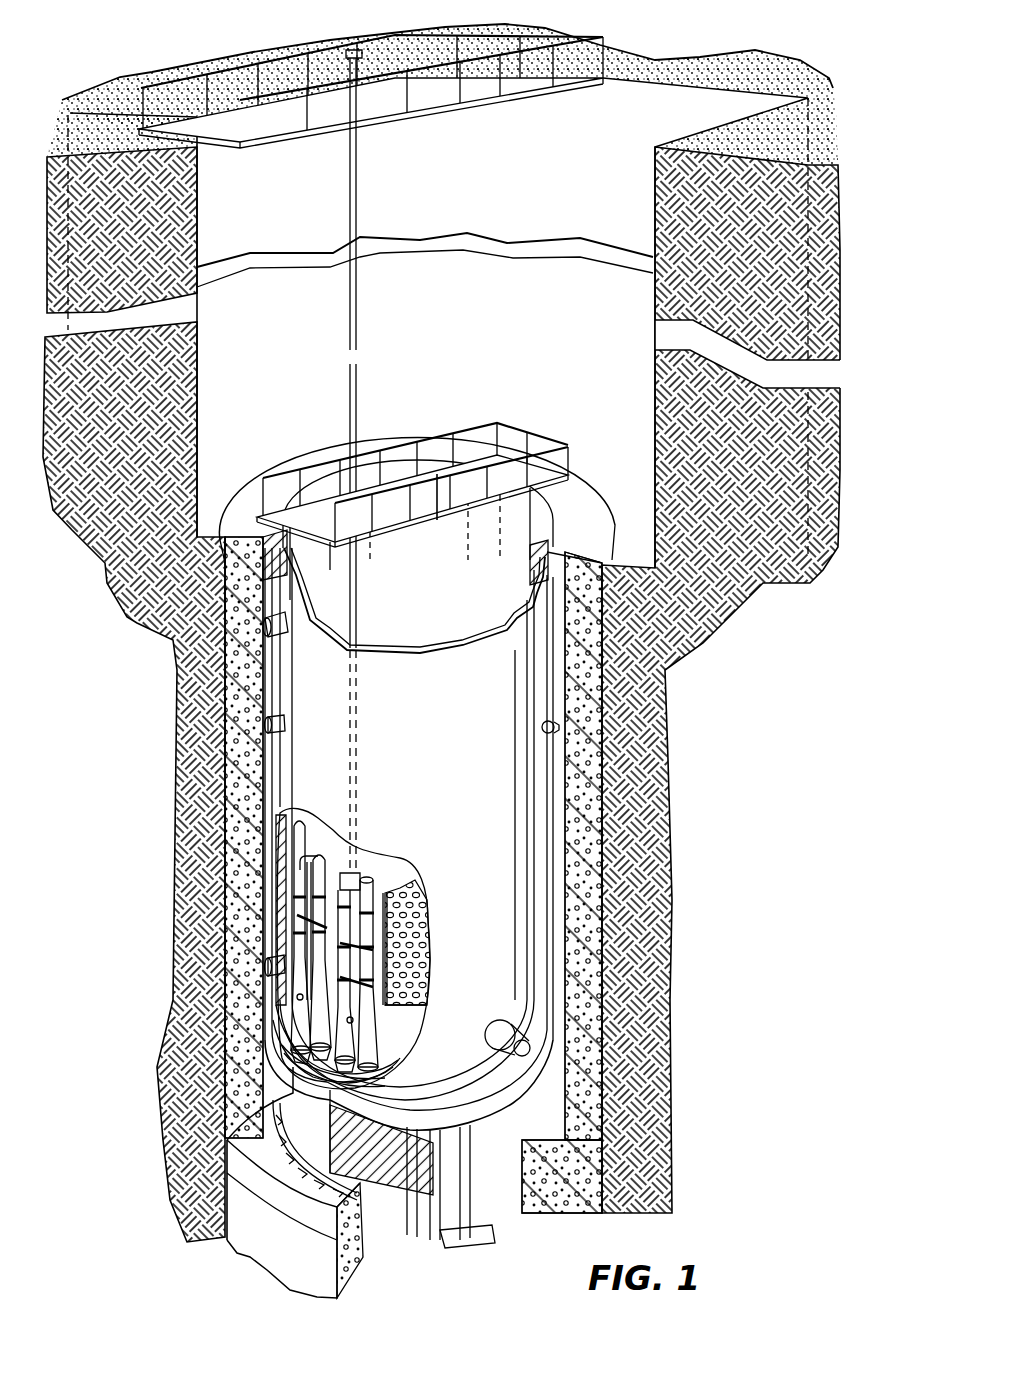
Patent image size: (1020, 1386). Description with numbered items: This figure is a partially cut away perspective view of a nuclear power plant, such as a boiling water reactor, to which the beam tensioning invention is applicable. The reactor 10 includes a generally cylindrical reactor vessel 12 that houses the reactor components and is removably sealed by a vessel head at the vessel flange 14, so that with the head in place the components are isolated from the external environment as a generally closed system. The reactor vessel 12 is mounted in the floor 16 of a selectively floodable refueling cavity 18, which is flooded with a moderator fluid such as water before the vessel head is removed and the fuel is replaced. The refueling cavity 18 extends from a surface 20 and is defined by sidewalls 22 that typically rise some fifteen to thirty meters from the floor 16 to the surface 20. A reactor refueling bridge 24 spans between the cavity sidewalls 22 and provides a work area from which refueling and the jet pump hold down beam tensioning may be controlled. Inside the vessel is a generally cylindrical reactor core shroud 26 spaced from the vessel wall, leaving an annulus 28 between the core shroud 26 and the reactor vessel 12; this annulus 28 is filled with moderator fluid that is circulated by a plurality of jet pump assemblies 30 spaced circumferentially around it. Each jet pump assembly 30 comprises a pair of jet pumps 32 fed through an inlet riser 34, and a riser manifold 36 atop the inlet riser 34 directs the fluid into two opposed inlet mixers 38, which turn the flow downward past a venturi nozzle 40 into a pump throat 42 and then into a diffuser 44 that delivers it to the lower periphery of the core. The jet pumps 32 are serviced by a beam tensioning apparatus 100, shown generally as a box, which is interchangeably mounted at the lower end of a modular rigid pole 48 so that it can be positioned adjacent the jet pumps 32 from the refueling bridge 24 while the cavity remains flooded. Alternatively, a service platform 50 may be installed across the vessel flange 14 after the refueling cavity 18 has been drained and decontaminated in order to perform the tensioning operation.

The reactor 10 is at (140, 730).
The reactor vessel 12 is at (420, 767).
The vessel flange 14 is at (530, 577).
The floor 16 is at (273, 457).
The refueling cavity 18 is at (256, 236).
The surface 20 is at (688, 60).
The sidewalls 22 is at (198, 393).
The reactor refueling bridge 24 is at (265, 125).
The reactor core shroud 26 is at (427, 993).
The annulus 28 is at (273, 893).
The jet pump assemblies 30 is at (400, 950).
The jet pumps 32 is at (393, 943).
The inlet riser 34 is at (390, 1017).
The riser manifold 36 is at (362, 922).
The inlet mixers 38 is at (372, 910).
The venturi nozzle 40 is at (408, 910).
The pump throat 42 is at (420, 966).
The diffuser 44 is at (370, 1047).
The rigid pole 48 is at (363, 637).
The service platform 50 is at (436, 512).
The beam tensioning apparatus 100 is at (328, 843).